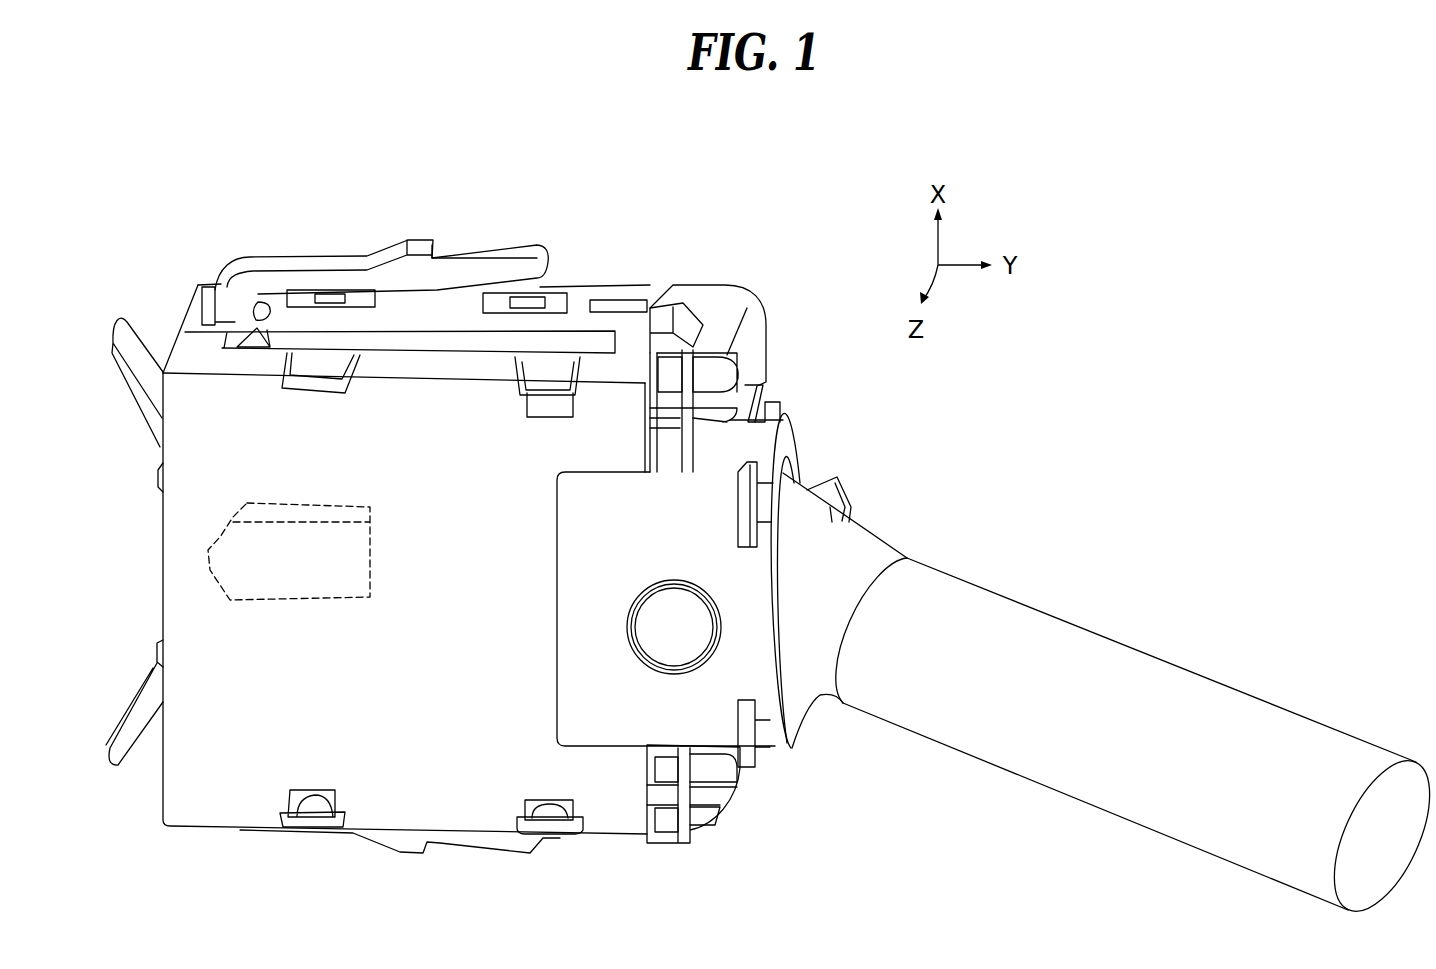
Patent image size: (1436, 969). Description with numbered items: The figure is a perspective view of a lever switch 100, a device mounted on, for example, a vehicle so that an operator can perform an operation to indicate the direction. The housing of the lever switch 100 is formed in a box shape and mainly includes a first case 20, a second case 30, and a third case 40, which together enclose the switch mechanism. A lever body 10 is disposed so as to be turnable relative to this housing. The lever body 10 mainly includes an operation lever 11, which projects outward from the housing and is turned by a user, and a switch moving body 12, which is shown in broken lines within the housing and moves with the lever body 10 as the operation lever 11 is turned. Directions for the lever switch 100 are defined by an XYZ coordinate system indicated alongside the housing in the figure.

The lever switch 100 is at (833, 183).
The lever body 10 is at (926, 556).
The operation lever 11 is at (1067, 620).
The switch moving body 12 is at (247, 503).
The first case 20 is at (552, 298).
The second case 30 is at (621, 402).
The third case 40 is at (457, 315).